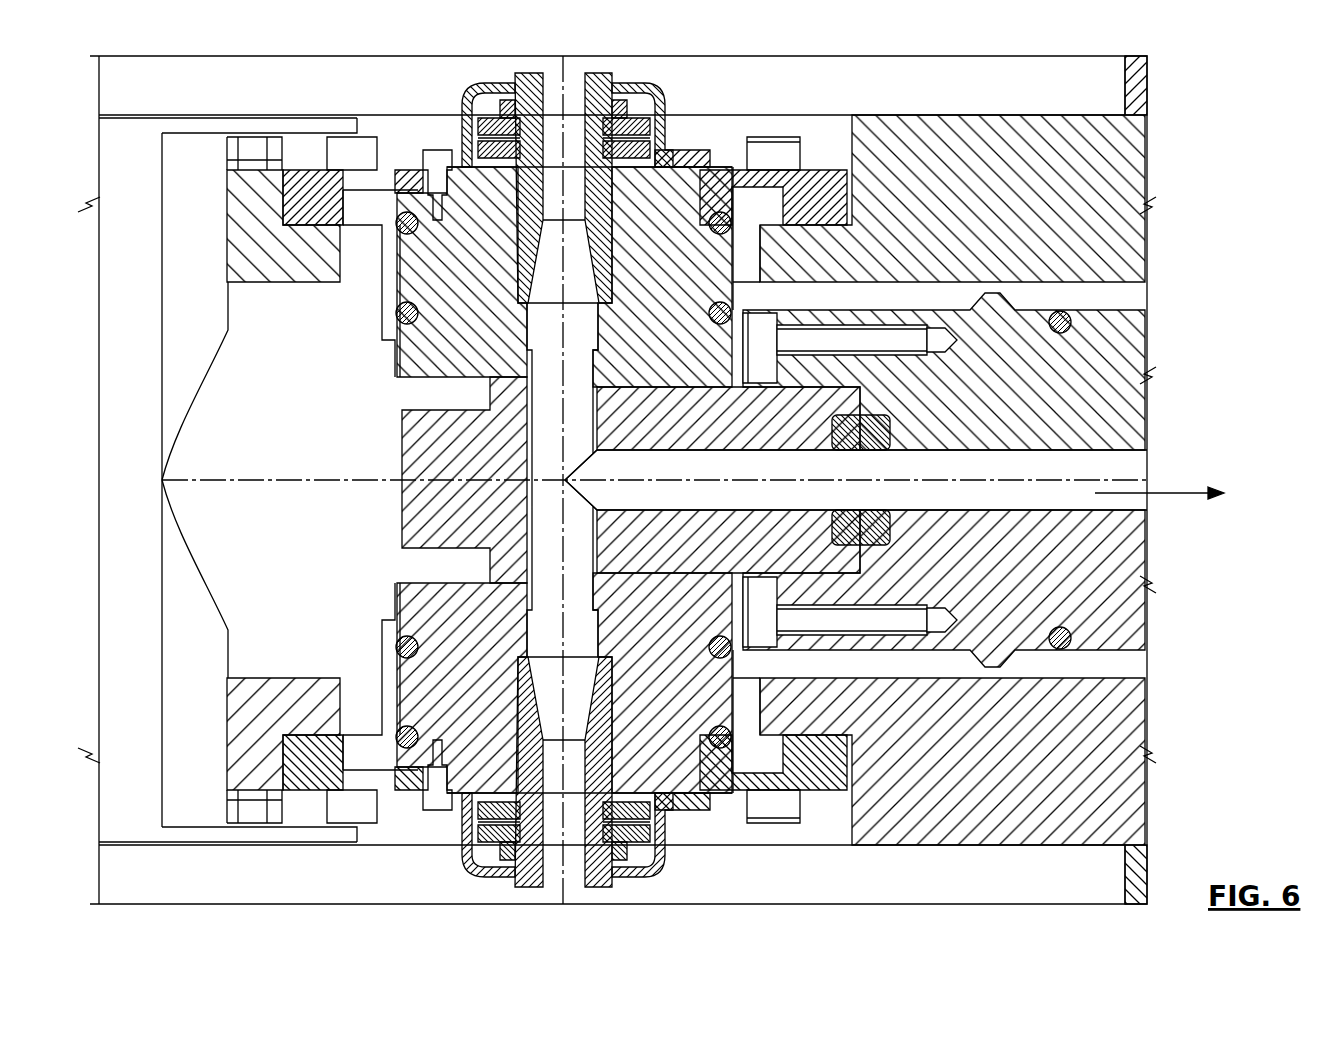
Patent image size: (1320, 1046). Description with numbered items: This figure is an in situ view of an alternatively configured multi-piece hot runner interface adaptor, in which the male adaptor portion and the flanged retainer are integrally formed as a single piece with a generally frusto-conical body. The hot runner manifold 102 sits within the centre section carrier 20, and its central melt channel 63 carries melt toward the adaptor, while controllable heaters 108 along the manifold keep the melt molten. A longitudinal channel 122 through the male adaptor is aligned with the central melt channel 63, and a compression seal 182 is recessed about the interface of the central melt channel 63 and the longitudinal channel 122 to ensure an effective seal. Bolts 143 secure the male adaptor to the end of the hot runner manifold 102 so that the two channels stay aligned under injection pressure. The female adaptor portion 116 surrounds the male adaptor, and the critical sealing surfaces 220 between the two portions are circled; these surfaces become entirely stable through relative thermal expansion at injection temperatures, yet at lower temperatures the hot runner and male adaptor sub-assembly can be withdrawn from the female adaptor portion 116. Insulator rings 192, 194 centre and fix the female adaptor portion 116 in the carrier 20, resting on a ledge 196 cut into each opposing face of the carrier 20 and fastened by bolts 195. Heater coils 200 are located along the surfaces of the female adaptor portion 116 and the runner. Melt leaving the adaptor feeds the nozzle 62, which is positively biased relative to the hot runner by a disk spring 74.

The centre section carrier 20 is at (242, 197).
The ledge 196 is at (293, 213).
The second nozzle 62 is at (613, 78).
The disk spring 74 is at (648, 112).
The bolts 195 is at (775, 148).
The insulator ring 192 is at (822, 185).
The insulator ring 194 is at (818, 772).
The hot runner manifold 102 is at (1105, 367).
The bolts 143 is at (875, 330).
The controllable heaters 108 is at (1063, 311).
The critical sealing surfaces 220 is at (400, 548).
The female adaptor portion 116 is at (690, 768).
The heater coils 200 is at (708, 314).
The compression seal 182 is at (880, 522).
The longitudinal channel 122 is at (712, 480).
The central melt channel 63 is at (1003, 480).